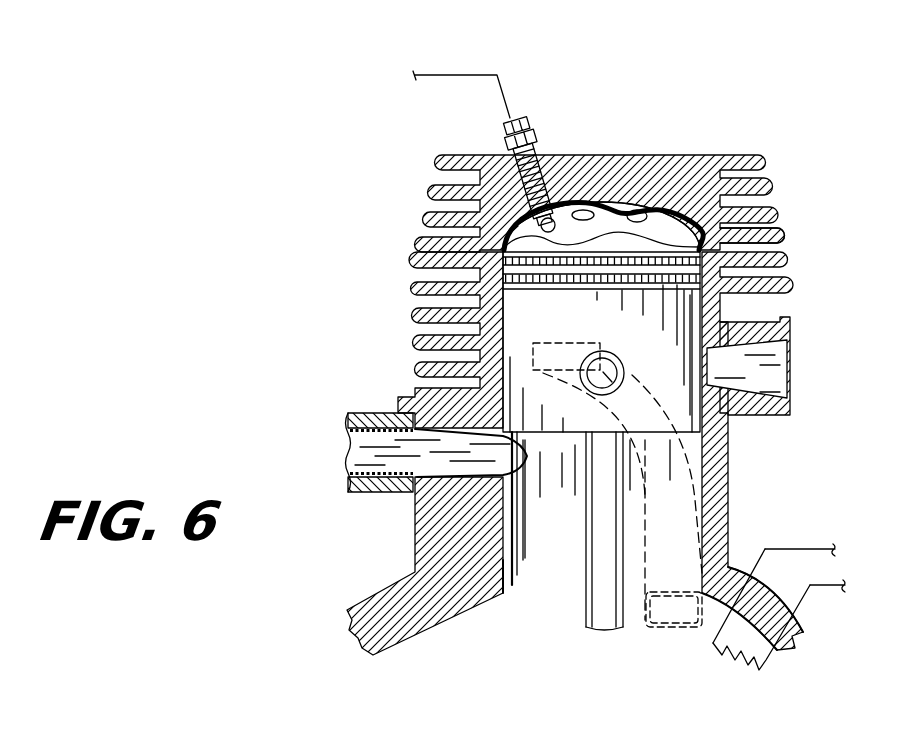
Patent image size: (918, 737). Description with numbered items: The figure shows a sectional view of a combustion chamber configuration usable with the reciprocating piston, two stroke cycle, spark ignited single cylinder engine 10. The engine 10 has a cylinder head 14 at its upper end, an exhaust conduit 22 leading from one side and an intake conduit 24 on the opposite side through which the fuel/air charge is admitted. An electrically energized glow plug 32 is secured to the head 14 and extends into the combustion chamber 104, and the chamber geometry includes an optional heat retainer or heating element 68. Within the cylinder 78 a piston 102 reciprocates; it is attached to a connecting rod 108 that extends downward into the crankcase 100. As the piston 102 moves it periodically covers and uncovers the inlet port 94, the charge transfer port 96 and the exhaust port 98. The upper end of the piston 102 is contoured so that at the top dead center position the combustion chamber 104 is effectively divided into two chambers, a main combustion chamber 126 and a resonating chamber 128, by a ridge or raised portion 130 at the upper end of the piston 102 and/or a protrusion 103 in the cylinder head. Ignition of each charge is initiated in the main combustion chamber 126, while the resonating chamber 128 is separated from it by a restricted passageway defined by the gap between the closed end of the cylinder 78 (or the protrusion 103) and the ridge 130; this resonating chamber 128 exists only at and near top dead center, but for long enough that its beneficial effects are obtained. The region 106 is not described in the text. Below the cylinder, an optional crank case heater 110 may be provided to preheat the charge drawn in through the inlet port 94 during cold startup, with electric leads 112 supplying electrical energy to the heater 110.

The engine 10 is at (345, 270).
The cylinder head 14 is at (753, 152).
The exhaust conduit 22 is at (743, 412).
The intake conduit 24 is at (413, 413).
The glow plug 32 is at (500, 137).
The heat retainer or heating element 68 is at (597, 207).
The cylinder 78 is at (513, 580).
The inlet port 94 is at (527, 460).
The charge transfer port 96 is at (533, 368).
The exhaust port 98 is at (710, 372).
The crankcase 100 is at (363, 597).
The piston 102 is at (527, 318).
The protrusion 103 is at (660, 223).
The combustion chamber 104 is at (710, 155).
The head lower portion 106 is at (503, 240).
The connecting rod 108 is at (587, 608).
The crank case heater 110 is at (717, 661).
The electric leads 112 is at (770, 548).
The main combustion chamber 126 is at (557, 230).
The resonating chamber 128 is at (740, 230).
The ridge or raised portion 130 is at (613, 218).